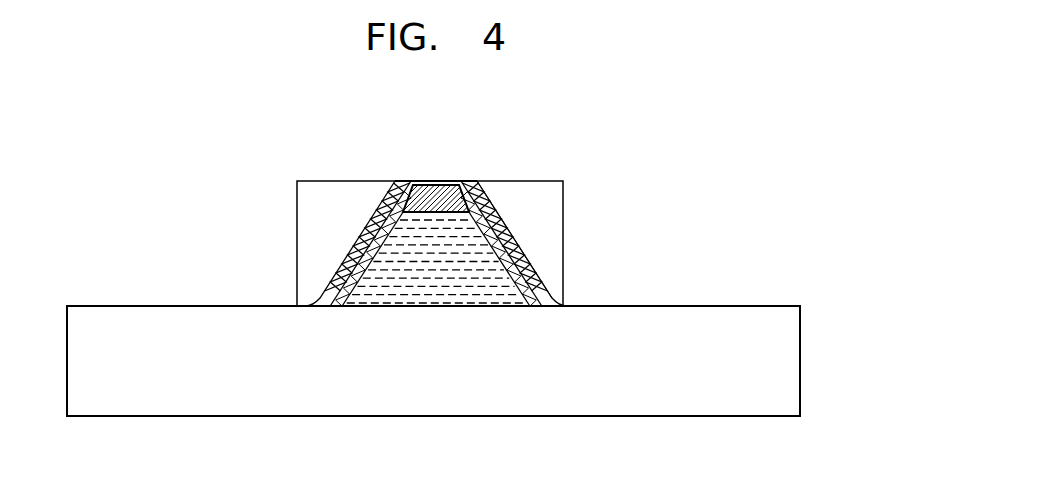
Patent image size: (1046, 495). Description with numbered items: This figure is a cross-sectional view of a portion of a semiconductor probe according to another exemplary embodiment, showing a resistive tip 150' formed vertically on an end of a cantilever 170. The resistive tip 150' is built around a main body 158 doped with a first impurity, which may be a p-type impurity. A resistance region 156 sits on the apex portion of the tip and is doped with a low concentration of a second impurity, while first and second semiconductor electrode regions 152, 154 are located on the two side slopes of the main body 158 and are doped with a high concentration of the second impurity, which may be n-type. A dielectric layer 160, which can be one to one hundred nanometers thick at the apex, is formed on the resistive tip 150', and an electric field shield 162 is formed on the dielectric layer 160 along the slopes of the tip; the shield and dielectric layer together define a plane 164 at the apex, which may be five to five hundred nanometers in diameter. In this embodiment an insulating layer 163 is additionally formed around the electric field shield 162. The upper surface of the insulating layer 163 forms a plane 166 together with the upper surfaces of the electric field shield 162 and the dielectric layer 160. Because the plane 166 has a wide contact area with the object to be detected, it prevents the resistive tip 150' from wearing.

The resistive tip 150' is at (516, 336).
The first semiconductor electrode region 152 is at (366, 280).
The second semiconductor electrode region 154 is at (504, 278).
The resistance region 156 is at (460, 206).
The main body 158 is at (433, 290).
The dielectric layer 160 is at (340, 275).
The electric field shield 162 is at (366, 235).
The insulating layer 163 is at (563, 267).
The plane 164 is at (424, 173).
The plane 166 is at (503, 172).
The cantilever 170 is at (692, 317).